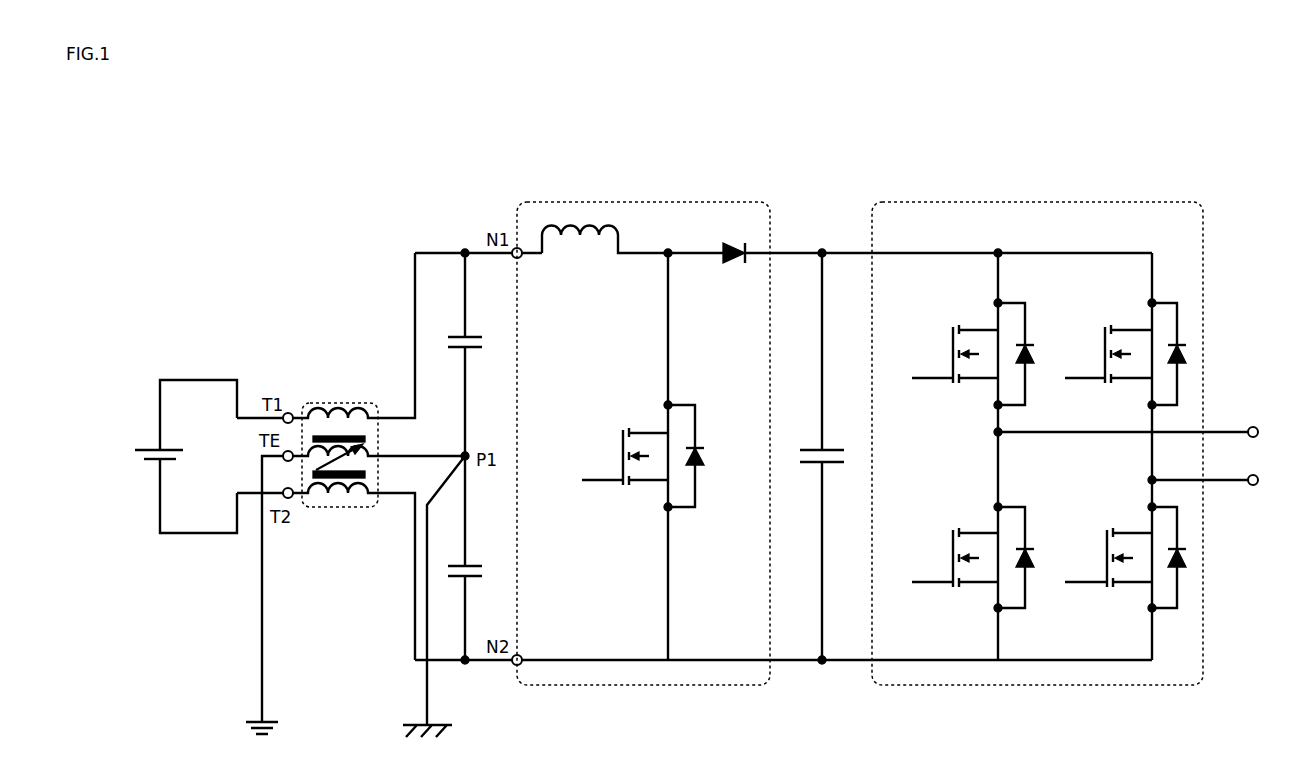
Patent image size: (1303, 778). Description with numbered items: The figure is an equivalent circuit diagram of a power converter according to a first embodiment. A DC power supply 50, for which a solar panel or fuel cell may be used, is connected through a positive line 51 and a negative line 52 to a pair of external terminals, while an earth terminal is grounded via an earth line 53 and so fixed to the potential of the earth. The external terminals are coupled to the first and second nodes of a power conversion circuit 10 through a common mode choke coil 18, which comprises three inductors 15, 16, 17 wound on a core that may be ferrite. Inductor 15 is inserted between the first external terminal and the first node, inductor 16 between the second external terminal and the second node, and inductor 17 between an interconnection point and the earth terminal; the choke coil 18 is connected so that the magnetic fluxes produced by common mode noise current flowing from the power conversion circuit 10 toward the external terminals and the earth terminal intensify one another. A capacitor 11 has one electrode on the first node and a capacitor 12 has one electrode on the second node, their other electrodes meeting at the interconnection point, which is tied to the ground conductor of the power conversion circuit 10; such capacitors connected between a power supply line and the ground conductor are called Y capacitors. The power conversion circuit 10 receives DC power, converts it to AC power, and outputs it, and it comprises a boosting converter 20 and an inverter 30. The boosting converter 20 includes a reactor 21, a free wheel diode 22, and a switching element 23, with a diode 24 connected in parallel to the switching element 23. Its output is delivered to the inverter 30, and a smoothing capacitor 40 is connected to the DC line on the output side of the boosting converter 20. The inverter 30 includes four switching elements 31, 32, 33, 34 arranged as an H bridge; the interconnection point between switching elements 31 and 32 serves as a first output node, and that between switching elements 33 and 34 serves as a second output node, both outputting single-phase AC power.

The power conversion circuit 10 is at (902, 411).
The capacitor 11 is at (470, 337).
The capacitor 12 is at (470, 566).
The inductor 15 is at (335, 419).
The inductor 16 is at (335, 495).
The inductor 17 is at (370, 450).
The common mode choke coil 18 is at (355, 456).
The boosting converter 20 is at (834, 413).
The reactor 21 is at (612, 231).
The free wheel diode 22 is at (733, 246).
The switching element 23 is at (622, 445).
The diode 24 is at (702, 464).
The inverter 30 is at (1079, 426).
The switching element 31 is at (952, 347).
The switching element 32 is at (952, 544).
The switching element 33 is at (1104, 347).
The switching element 34 is at (1106, 545).
The smoothing capacitor 40 is at (826, 450).
The DC power supply 50 is at (148, 452).
The positive line 51 is at (231, 378).
The negative line 52 is at (226, 535).
The earth line 53 is at (260, 463).